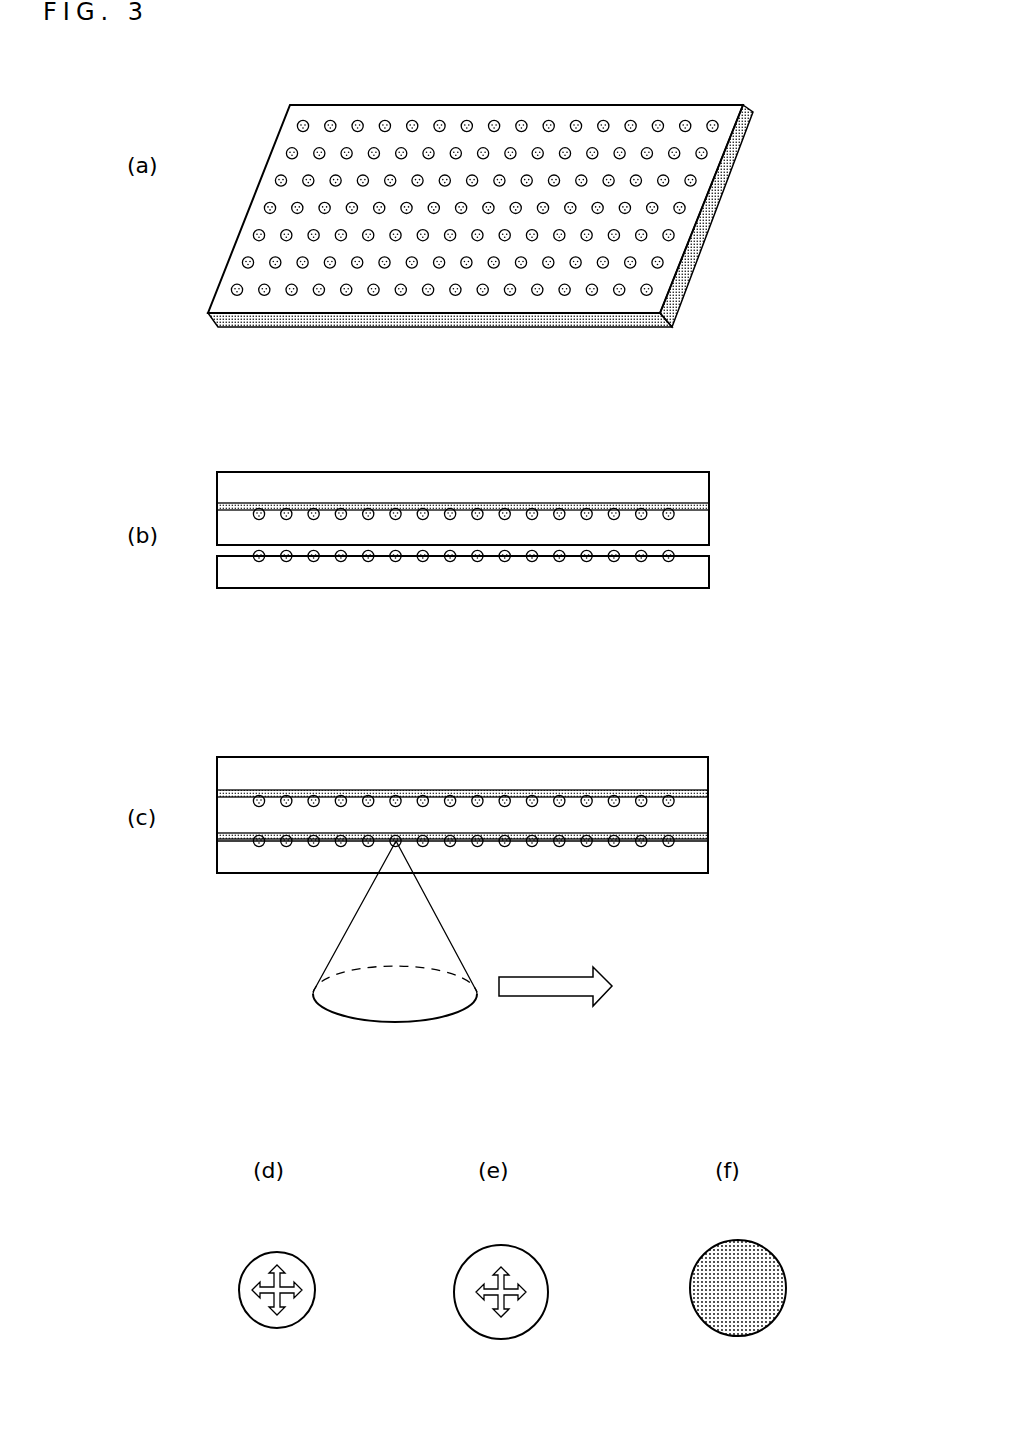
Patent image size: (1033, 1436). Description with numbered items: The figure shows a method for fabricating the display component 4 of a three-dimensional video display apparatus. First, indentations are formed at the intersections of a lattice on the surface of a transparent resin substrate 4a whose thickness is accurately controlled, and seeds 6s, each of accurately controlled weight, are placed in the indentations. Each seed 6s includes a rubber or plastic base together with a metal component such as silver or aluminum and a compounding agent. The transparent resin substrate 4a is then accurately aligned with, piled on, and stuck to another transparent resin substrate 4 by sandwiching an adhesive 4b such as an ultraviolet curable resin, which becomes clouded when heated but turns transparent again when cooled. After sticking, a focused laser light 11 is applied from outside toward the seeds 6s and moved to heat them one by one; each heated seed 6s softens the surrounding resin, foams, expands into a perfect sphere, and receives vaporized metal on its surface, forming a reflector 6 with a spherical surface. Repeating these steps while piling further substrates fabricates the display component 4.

The laminated substrate 4 is at (735, 505).
The substrate layer 4a is at (716, 106).
The substrate layer 4b is at (697, 838).
The solder ball / conductive sphere 6s is at (496, 122).
The conductive bump 6 is at (785, 1270).
The heating cone / laser beam 11 is at (371, 1012).